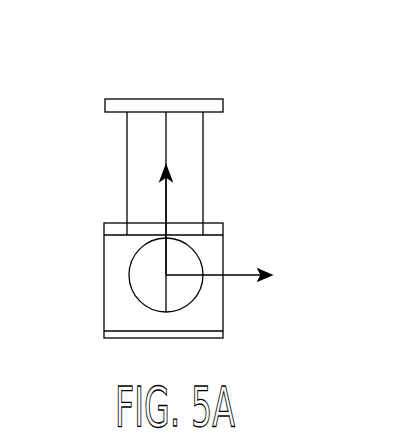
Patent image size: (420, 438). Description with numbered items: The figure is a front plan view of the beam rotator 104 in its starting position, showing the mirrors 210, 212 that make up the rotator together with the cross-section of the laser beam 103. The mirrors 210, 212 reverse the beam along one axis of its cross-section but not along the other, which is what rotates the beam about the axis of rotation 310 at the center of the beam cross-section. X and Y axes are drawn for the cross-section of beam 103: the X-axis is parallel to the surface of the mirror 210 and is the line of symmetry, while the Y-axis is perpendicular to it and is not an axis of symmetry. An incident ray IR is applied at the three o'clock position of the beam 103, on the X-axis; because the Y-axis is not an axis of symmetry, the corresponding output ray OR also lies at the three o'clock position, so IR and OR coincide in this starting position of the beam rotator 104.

The beam rotator 104 is at (177, 172).
The mirror 212 is at (213, 99).
The mirror 210 is at (207, 317).
The laser beam 103 is at (142, 286).
The axis of rotation 310 is at (172, 269).